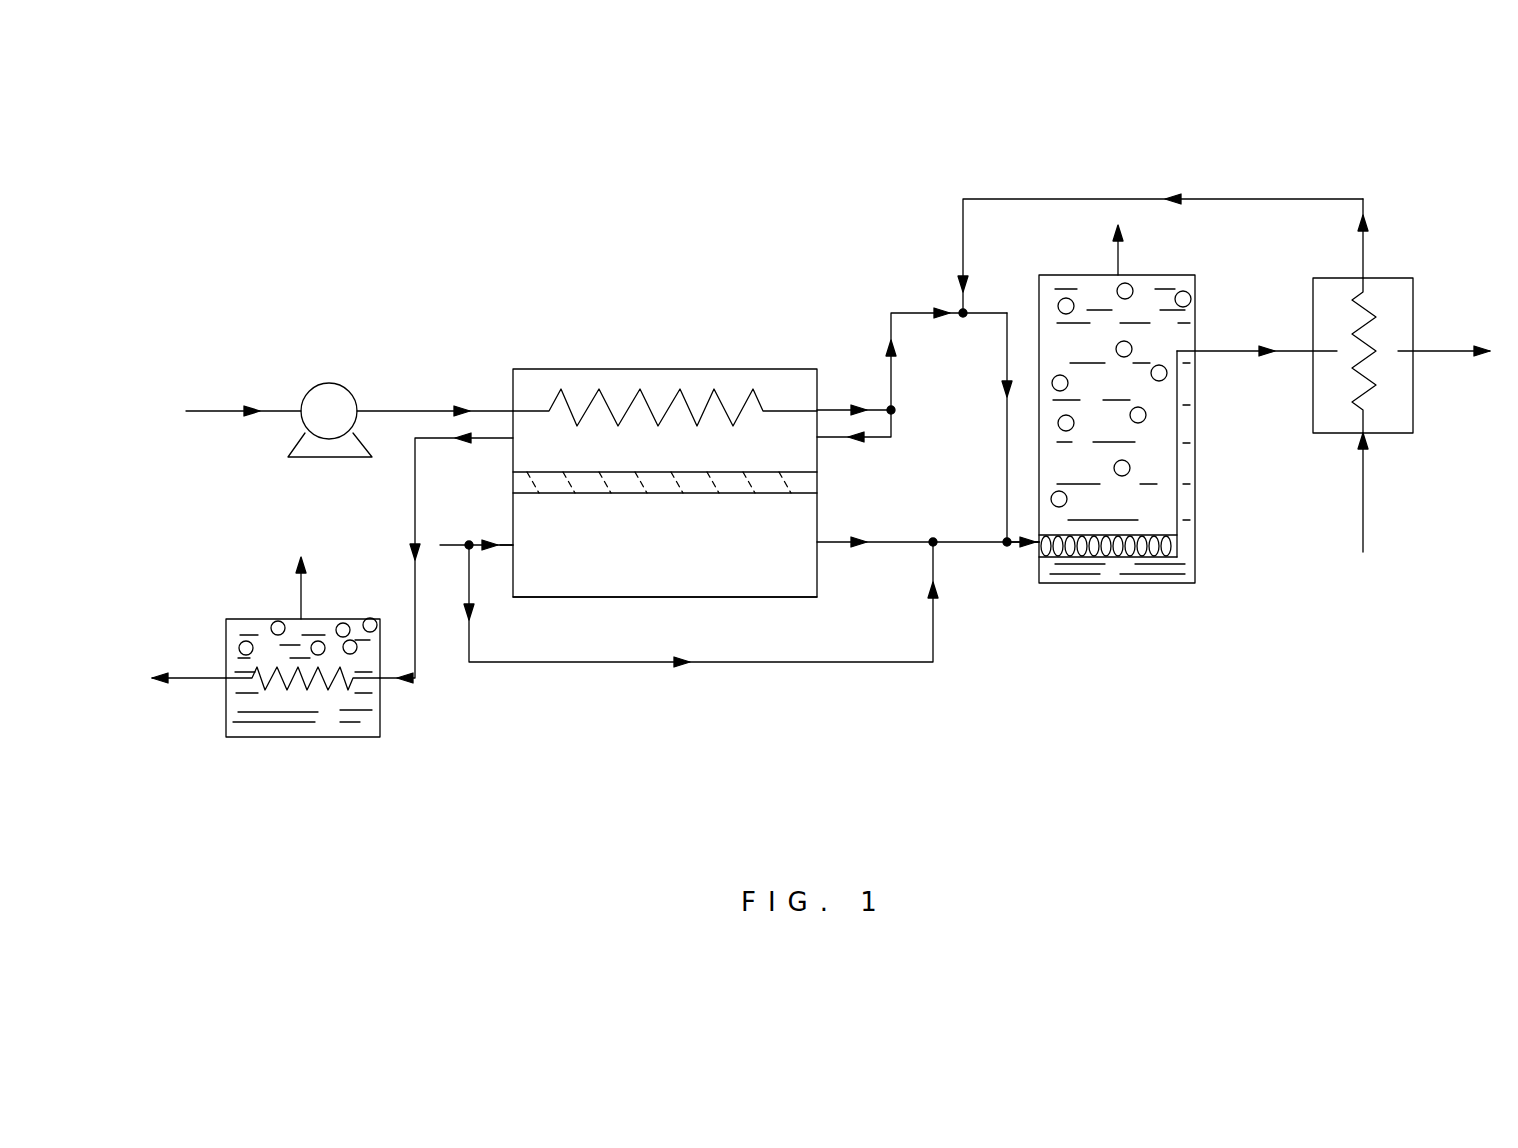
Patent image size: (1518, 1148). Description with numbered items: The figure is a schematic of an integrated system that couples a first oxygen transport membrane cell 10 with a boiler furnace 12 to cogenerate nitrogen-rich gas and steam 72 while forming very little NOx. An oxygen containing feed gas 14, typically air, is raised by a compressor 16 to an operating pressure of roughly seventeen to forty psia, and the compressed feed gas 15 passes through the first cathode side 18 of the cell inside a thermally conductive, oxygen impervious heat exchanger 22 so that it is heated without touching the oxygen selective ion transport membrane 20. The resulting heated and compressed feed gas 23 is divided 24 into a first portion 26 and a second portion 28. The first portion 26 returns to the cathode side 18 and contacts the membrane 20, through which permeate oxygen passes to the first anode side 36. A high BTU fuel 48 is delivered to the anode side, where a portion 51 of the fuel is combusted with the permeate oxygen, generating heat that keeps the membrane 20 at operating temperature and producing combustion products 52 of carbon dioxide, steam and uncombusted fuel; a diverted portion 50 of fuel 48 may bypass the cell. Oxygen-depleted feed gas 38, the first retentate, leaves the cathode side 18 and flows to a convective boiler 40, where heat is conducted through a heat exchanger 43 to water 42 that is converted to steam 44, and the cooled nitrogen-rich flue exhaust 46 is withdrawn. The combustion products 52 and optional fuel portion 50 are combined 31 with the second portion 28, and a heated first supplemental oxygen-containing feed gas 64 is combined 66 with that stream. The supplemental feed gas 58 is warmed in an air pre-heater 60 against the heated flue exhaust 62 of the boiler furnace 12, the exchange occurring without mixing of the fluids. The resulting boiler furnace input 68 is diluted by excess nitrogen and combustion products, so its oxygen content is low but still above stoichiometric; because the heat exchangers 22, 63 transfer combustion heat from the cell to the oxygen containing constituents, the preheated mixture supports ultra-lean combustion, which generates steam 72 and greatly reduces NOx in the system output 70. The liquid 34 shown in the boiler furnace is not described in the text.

The first oxygen transport membrane cell 10 is at (520, 369).
The boiler furnace 12 is at (1128, 600).
The oxygen containing feed gas 14 is at (210, 411).
The compressed feed gas 15 is at (425, 411).
The compressor 16 is at (340, 397).
The first cathode side 18 is at (797, 450).
The oxygen selective ion transport membrane 20 is at (812, 488).
The heat exchanger 22 is at (650, 404).
The heated and compressed feed gas 23 is at (830, 410).
The division point 24 is at (893, 410).
The first portion 26 is at (893, 423).
The second portion 28 is at (893, 378).
The combining point 31 is at (1005, 545).
The liquid in separator 34 is at (1157, 497).
The first anode side 36 is at (810, 580).
The oxygen-depleted feed gas 38 is at (415, 500).
The convective boiler 40 is at (320, 752).
The water 42 is at (365, 714).
The heat exchanger 43 is at (280, 690).
The steam 44 is at (301, 594).
The flue exhaust 46 is at (187, 680).
The high BTU fuel 48 is at (452, 545).
The diverted portion of fuel 50 is at (472, 633).
The fuel portion delivered to anode 51 is at (515, 543).
The combustion products 52 is at (885, 542).
The first supplemental oxygen-containing feed gas 58 is at (1366, 505).
The air pre-heater 60 is at (1407, 398).
The flue exhaust 62 is at (1236, 351).
The heat exchanger 63 is at (1373, 352).
The heated first supplemental oxygen-containing feed gas 64 is at (1244, 199).
The combining point 66 is at (965, 311).
The boiler furnace input 68 is at (1028, 548).
The system output 70 is at (1453, 351).
The steam 72 is at (1120, 258).